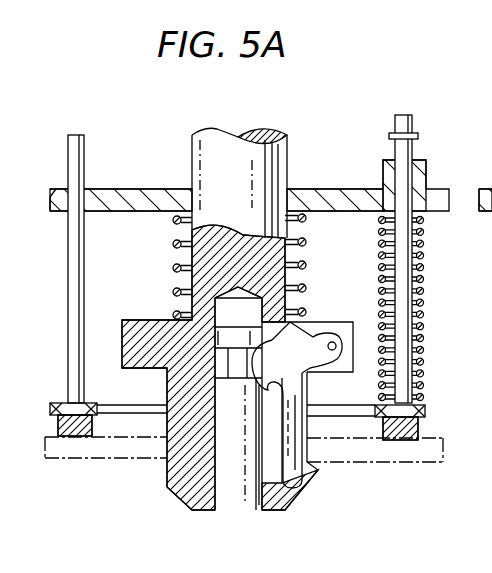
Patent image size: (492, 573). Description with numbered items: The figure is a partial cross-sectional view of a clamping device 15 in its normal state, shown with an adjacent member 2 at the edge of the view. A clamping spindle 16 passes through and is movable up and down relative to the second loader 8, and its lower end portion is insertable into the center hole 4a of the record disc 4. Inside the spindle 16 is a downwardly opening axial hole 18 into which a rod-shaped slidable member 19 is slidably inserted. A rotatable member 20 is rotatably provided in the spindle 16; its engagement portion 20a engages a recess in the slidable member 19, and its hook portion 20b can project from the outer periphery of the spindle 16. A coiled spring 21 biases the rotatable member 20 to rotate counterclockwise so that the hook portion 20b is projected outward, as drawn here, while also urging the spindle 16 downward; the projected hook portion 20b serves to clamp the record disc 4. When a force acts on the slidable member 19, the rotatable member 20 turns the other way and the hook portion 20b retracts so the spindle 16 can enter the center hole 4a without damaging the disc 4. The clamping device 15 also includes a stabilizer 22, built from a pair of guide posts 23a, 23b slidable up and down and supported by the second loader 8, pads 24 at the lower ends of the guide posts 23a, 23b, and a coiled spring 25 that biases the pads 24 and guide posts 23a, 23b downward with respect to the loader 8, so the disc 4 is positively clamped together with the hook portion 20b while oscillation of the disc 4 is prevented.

The adjacent member 2 is at (485, 225).
The record disc 4 is at (90, 458).
The center hole 4a is at (165, 447).
The second loader 8 is at (330, 189).
The clamping device 15 is at (153, 150).
The clamping spindle 16 is at (167, 492).
The axial hole 18 is at (190, 327).
The slidable member 19 is at (240, 500).
The rotatable member 20 is at (313, 342).
The engagement portion 20a is at (300, 384).
The hook portion 20b is at (308, 474).
The coiled spring 21 is at (172, 245).
The stabilizer 22 is at (440, 393).
The guide post 23a is at (408, 152).
The guide post 23b is at (79, 157).
The pads 24 is at (60, 425).
The coiled spring 25 is at (378, 249).